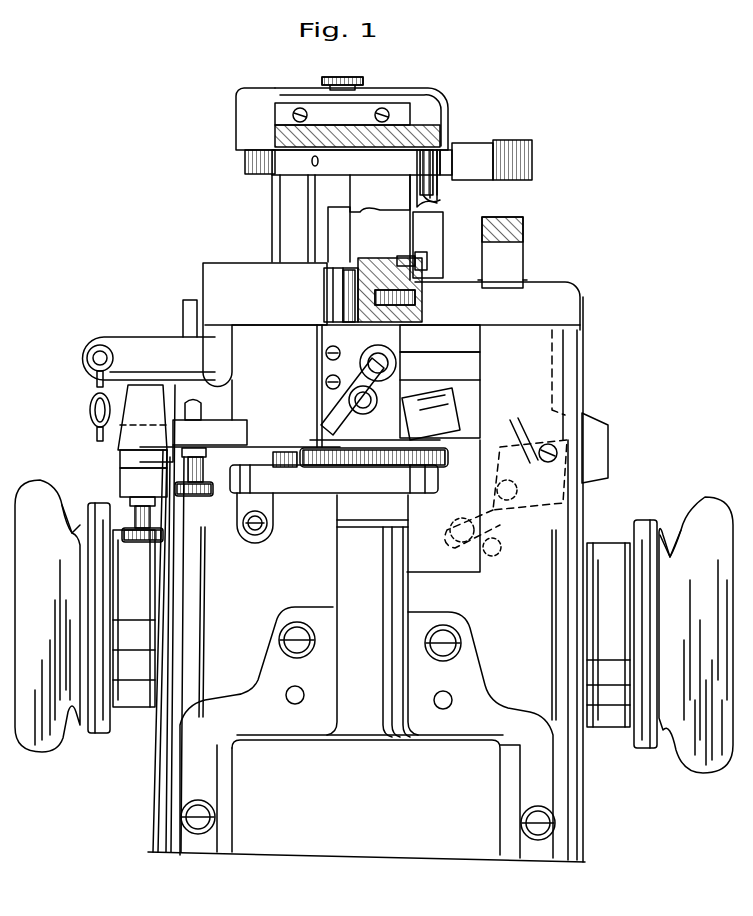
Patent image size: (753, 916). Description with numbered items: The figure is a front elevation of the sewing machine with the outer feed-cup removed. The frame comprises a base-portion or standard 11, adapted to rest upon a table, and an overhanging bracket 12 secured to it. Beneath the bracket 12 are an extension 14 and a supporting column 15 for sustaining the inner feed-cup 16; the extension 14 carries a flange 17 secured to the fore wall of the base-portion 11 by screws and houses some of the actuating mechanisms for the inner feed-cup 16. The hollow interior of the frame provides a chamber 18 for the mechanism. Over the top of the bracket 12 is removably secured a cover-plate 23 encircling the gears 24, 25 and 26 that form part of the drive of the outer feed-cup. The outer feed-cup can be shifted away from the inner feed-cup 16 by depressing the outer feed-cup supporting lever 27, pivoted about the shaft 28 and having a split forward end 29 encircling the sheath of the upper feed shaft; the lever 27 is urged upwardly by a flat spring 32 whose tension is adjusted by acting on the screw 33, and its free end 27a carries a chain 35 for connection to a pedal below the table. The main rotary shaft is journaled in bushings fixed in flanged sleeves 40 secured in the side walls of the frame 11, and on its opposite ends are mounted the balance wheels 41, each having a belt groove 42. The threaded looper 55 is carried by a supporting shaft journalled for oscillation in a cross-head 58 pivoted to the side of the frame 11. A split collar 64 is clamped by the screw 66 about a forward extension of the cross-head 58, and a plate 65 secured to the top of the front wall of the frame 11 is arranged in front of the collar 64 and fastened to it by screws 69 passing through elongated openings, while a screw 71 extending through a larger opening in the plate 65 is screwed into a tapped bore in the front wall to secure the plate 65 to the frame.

The base-portion 11 is at (572, 808).
The overhanging bracket 12 is at (582, 303).
The extension 14 is at (294, 838).
The supporting column 15 is at (350, 560).
The inner feed-cup 16 is at (333, 472).
The flange 17 is at (482, 697).
The chamber 18 is at (447, 640).
The cover-plate 23 is at (243, 117).
The gear 24 is at (446, 148).
The gear 25 is at (298, 142).
The gear 26 is at (284, 125).
The outer feed-cup supporting lever 27 is at (160, 346).
The free end of lever 27a is at (100, 346).
The shaft 28 is at (422, 284).
The split forward end 29 is at (399, 263).
The flat spring 32 is at (135, 398).
The screw 33 is at (141, 538).
The chain 35 is at (92, 420).
The flanged sleeve 40 is at (133, 708).
The balance wheel 41 is at (35, 752).
The belt groove 42 is at (72, 532).
The looper 55 is at (322, 431).
The cross-head 58 is at (462, 365).
The split collar 64 is at (372, 348).
The plate 65 is at (332, 399).
The screw 66 is at (420, 352).
The screws 69 is at (326, 378).
The screw 71 is at (316, 414).